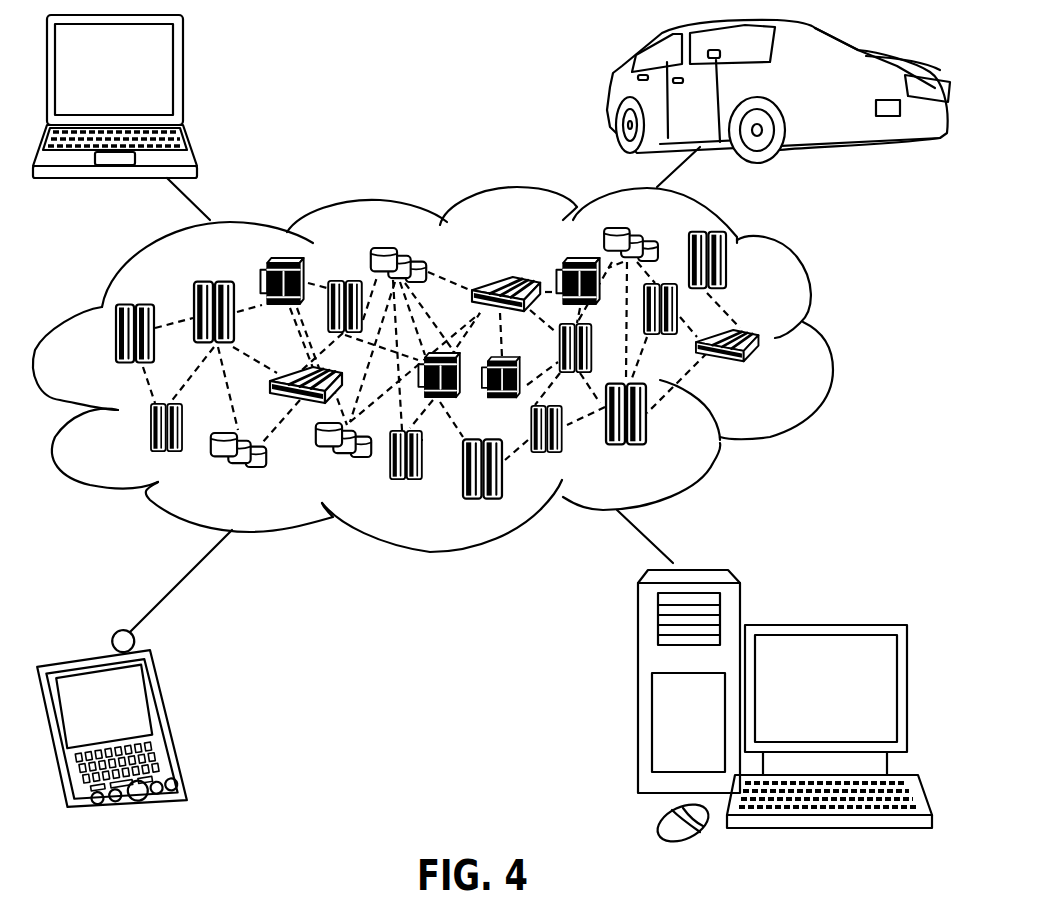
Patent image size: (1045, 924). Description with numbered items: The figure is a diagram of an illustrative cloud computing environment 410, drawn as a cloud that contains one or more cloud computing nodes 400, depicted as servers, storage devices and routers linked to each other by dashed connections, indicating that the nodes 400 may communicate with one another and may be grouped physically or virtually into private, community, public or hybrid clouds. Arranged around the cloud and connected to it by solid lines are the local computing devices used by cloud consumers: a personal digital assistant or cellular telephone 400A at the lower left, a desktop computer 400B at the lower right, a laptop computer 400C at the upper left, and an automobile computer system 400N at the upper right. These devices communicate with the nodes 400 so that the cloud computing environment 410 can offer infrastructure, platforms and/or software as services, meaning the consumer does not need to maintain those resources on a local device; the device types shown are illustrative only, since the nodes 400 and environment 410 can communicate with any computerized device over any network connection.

The cloud computing nodes 400 is at (467, 369).
The cloud computing environment 410 is at (827, 342).
The personal digital assistant or cellular telephone 400A is at (172, 718).
The desktop computer 400B is at (820, 625).
The laptop computer 400C is at (183, 78).
The automobile computer system 400N is at (610, 92).